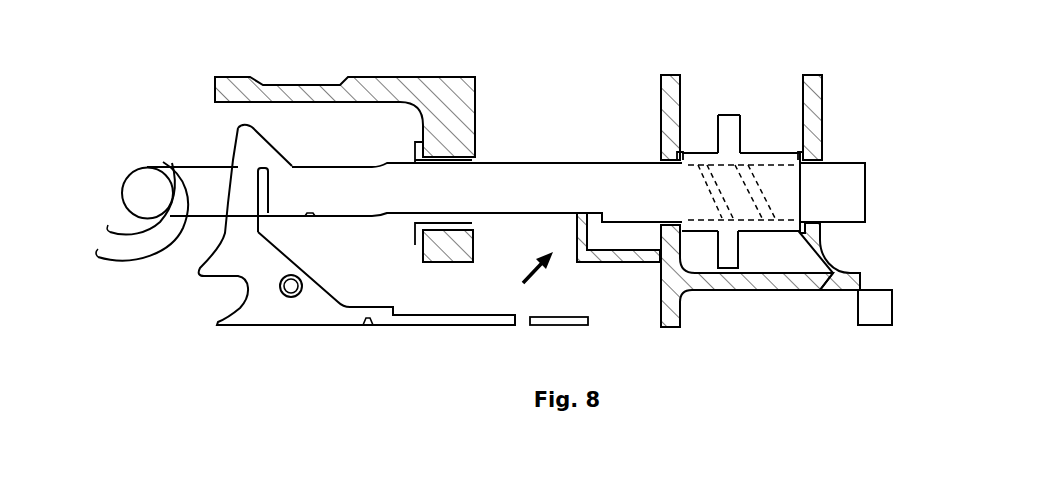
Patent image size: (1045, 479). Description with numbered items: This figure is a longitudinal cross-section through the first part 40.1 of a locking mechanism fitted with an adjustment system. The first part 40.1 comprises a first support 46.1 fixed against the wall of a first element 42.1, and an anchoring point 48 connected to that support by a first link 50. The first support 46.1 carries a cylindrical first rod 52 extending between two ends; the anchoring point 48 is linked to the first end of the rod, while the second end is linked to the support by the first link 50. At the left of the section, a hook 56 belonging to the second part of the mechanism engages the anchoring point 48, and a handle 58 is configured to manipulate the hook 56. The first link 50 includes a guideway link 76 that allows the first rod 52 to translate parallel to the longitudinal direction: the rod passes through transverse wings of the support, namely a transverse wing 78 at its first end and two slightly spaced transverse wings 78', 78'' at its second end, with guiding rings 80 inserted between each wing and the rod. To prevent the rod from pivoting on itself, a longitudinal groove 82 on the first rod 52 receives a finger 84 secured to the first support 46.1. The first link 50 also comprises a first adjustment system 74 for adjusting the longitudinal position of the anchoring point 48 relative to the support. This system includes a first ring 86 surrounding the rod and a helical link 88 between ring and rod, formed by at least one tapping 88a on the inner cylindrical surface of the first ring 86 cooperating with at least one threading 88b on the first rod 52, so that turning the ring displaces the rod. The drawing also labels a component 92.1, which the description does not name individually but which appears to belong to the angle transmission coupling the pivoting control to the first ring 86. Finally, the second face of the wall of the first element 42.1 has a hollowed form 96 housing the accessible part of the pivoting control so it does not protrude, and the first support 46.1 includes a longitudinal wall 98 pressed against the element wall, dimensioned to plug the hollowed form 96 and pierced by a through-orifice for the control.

The first part 40.1 is at (650, 77).
The first element 42.1 is at (865, 308).
The first support 46.1 is at (362, 90).
The anchoring point 48 is at (141, 182).
The first link 50 is at (853, 82).
The first rod 52 is at (550, 162).
The hook 56 is at (137, 246).
The handle 58 is at (460, 327).
The first adjustment system 74 is at (750, 85).
The guideway link 76 is at (493, 160).
The transverse wing 78 is at (448, 270).
The transverse wing 78' is at (680, 87).
The transverse wing 78'' is at (823, 88).
The guiding rings 80 is at (417, 148).
The longitudinal groove 82 is at (508, 217).
The finger 84 is at (577, 232).
The first ring 86 is at (757, 143).
The helical link 88 is at (775, 240).
The tapping 88a is at (745, 157).
The threading 88b is at (713, 168).
The tab 92.1 is at (728, 117).
The hollowed form 96 is at (728, 297).
The longitudinal wall 98 is at (862, 282).